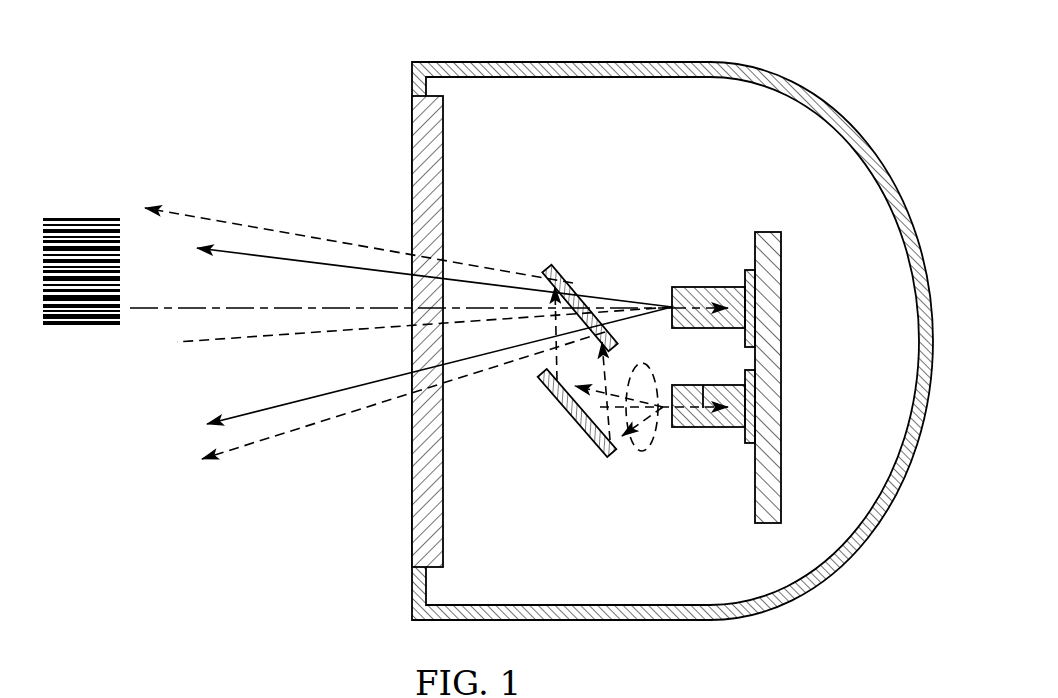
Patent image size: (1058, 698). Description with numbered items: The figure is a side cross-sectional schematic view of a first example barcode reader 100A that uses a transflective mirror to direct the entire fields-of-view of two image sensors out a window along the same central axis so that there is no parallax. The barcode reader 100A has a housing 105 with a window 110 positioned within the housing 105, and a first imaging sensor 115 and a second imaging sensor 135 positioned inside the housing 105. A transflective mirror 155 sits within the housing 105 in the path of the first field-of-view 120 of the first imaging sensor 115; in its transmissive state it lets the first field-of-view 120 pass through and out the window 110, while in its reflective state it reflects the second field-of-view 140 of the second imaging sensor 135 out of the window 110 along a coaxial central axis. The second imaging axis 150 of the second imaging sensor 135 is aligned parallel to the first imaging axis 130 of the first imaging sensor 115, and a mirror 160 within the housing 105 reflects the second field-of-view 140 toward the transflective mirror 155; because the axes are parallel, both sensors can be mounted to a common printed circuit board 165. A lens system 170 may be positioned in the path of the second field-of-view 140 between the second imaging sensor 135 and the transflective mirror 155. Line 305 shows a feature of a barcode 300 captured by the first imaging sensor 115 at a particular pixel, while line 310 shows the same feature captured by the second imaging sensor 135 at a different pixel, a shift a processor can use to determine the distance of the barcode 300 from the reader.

The barcode reader 100A is at (233, 55).
The housing 105 is at (478, 61).
The window 110 is at (423, 131).
The first imaging sensor 115 is at (735, 255).
The first field-of-view 120 is at (226, 246).
The first imaging axis 130 is at (609, 300).
The second imaging sensor 135 is at (731, 443).
The second field-of-view 140 is at (287, 234).
The second imaging axis 150 is at (587, 441).
The transflective mirror 155 is at (546, 267).
The mirror 160 is at (557, 406).
The printed circuit board 165 is at (784, 312).
The lens system 170 is at (645, 451).
The barcode 300 is at (79, 199).
The line 305 is at (690, 290).
The line 310 is at (700, 385).